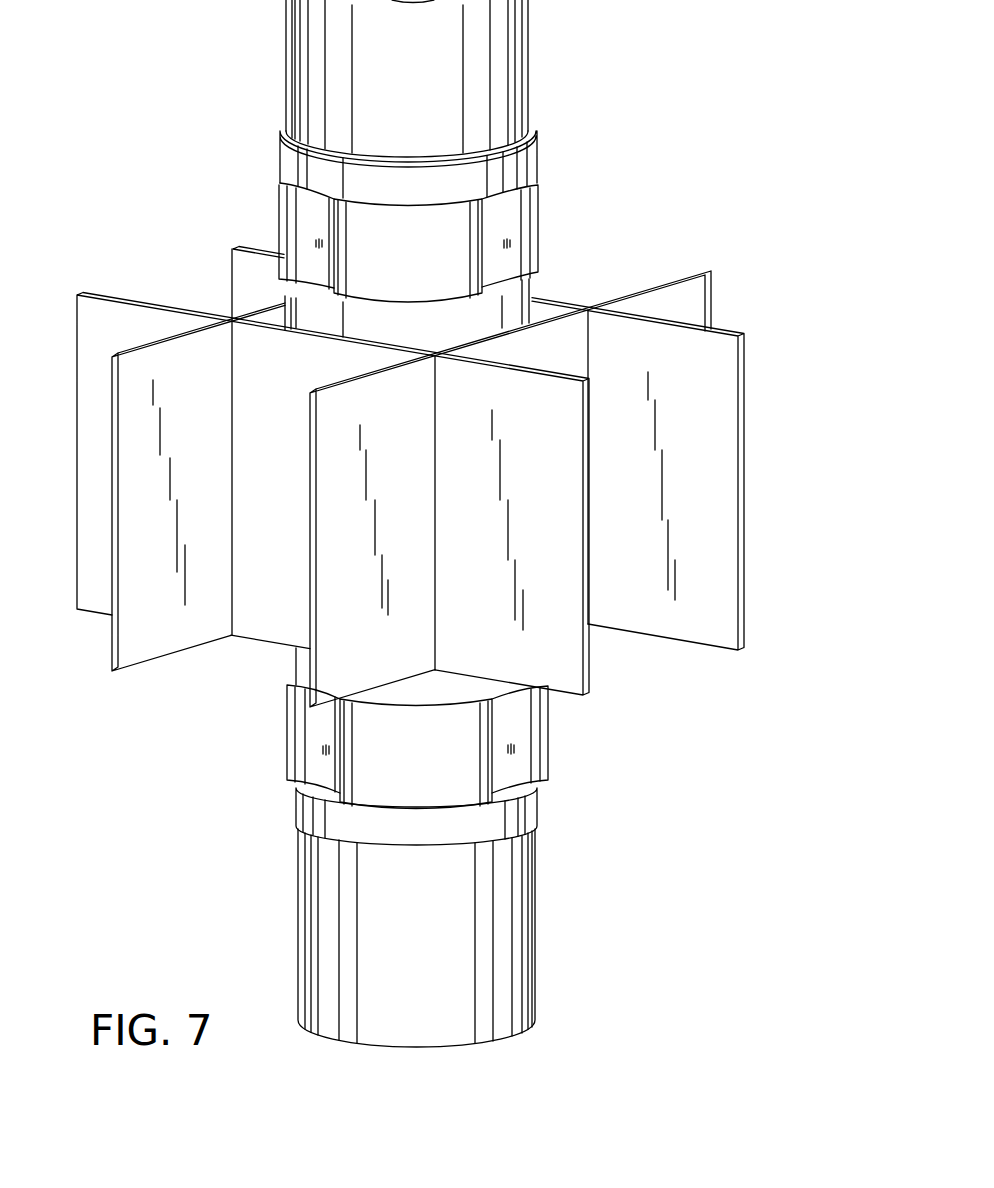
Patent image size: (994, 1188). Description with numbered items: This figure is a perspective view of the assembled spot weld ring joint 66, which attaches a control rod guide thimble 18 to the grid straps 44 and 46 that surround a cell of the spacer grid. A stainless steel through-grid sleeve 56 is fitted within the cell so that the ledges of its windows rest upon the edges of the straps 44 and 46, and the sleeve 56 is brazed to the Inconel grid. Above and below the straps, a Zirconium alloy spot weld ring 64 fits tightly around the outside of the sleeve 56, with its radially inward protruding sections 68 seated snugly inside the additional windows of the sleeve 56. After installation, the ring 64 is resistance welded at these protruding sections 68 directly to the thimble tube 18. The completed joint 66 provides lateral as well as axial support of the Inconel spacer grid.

The guide thimble 18 is at (508, 62).
The sleeve 56 is at (523, 160).
The spot weld ring 64 is at (512, 242).
The radially inward protruding sections 68 is at (327, 235).
The spot weld ring joint 66 is at (203, 215).
The grid strap 44 is at (337, 612).
The grid strap 46 is at (708, 491).